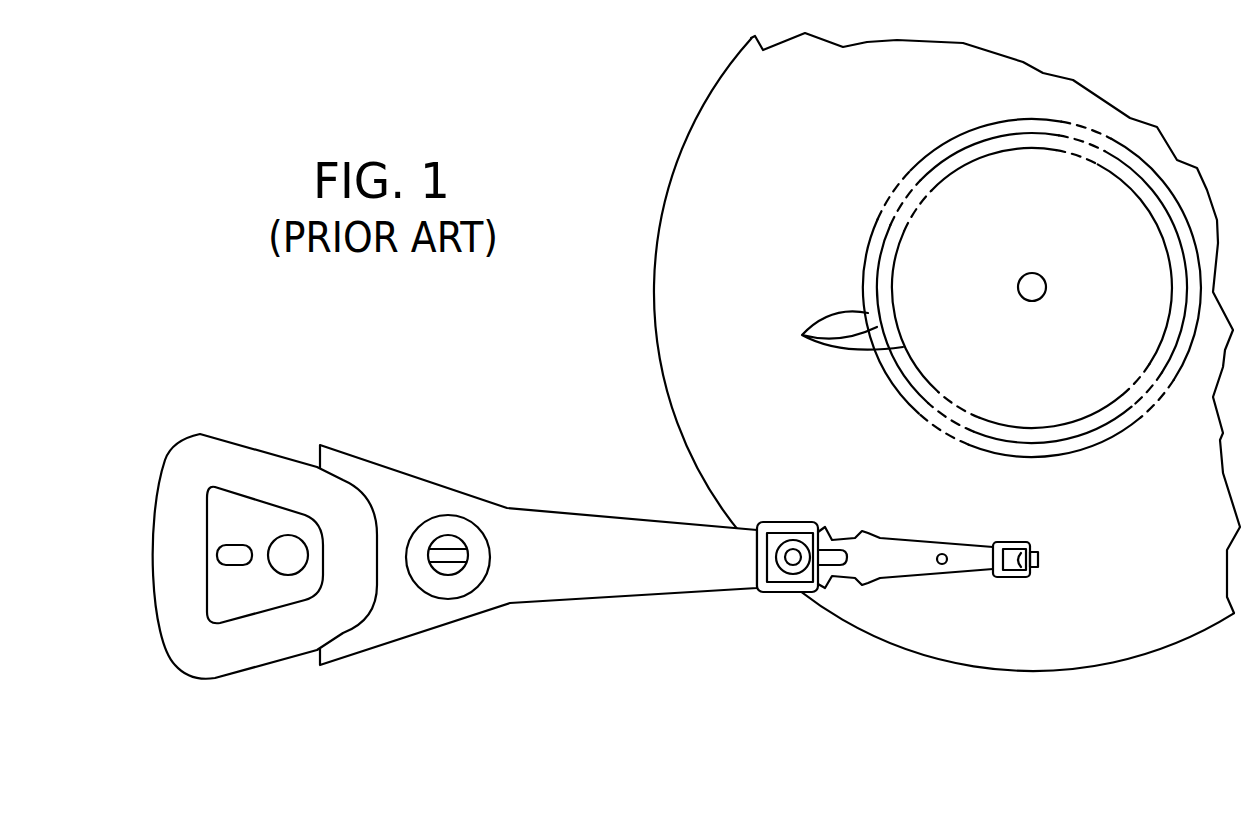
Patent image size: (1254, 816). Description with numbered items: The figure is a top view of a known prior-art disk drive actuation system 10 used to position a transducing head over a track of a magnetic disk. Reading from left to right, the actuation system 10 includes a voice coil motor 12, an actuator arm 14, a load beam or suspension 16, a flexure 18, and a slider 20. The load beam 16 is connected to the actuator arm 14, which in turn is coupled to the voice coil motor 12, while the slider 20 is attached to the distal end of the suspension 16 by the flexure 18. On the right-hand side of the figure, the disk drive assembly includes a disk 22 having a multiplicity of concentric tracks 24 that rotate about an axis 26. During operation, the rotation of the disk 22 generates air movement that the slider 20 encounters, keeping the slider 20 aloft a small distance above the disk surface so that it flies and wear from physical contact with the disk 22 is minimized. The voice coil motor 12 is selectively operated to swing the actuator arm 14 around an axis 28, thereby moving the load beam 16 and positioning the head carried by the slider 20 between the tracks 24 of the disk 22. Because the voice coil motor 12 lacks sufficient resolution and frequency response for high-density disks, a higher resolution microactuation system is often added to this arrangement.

The disk drive actuation system 10 is at (460, 455).
The voice coil motor 12 is at (202, 428).
The actuator arm 14 is at (540, 508).
The load beam or suspension 16 is at (885, 540).
The flexure 18 is at (1010, 542).
The slider 20 is at (1040, 558).
The disk 22 is at (667, 388).
The tracks 24 is at (802, 335).
The axis 26 is at (1032, 274).
The axis 28 is at (443, 567).